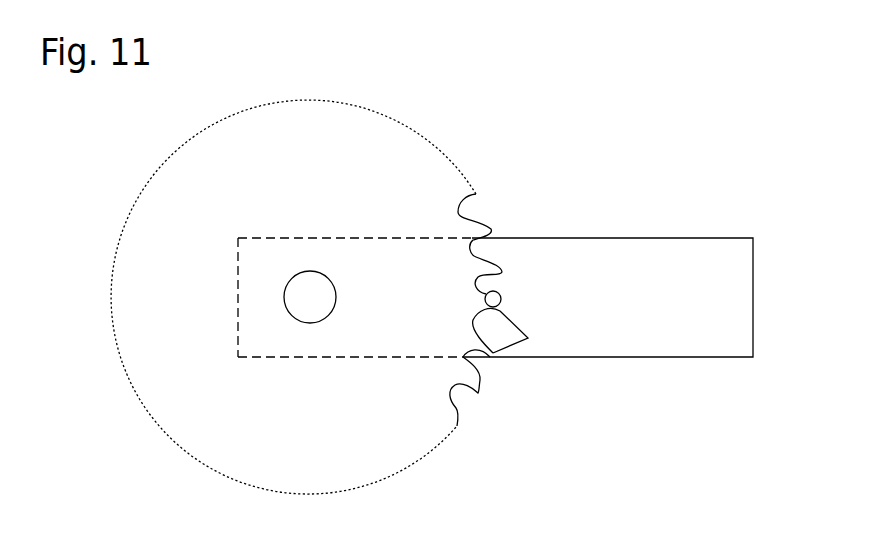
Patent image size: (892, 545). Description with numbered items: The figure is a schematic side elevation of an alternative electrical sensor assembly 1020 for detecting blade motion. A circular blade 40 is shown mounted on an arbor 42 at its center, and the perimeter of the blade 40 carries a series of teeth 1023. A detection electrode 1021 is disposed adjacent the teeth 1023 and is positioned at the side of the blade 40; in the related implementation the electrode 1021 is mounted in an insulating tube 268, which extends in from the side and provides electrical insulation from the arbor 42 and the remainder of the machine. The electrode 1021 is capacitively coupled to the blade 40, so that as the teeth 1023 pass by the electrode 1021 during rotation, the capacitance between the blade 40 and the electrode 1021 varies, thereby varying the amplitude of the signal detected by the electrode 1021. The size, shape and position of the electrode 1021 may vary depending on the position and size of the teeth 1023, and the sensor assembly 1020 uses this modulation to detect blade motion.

The blade 40 is at (323, 170).
The arbor 42 is at (335, 285).
The insulating tube 268 is at (683, 250).
The electrical sensor assembly 1020 is at (582, 145).
The detection electrode 1021 is at (499, 293).
The teeth 1023 is at (529, 338).